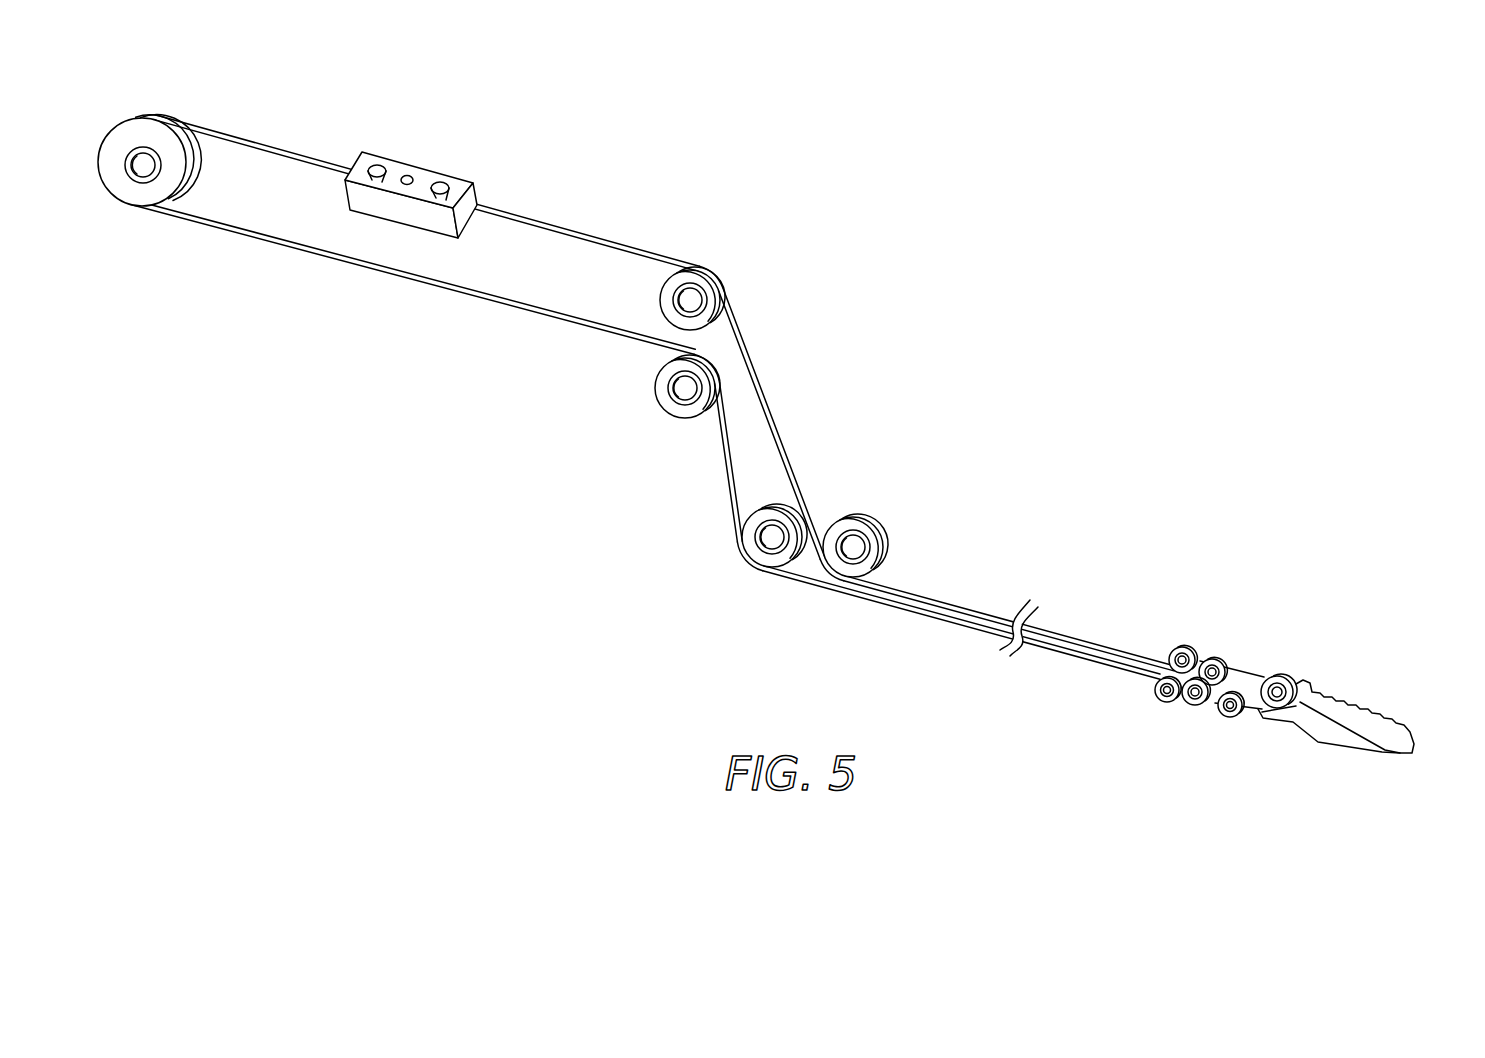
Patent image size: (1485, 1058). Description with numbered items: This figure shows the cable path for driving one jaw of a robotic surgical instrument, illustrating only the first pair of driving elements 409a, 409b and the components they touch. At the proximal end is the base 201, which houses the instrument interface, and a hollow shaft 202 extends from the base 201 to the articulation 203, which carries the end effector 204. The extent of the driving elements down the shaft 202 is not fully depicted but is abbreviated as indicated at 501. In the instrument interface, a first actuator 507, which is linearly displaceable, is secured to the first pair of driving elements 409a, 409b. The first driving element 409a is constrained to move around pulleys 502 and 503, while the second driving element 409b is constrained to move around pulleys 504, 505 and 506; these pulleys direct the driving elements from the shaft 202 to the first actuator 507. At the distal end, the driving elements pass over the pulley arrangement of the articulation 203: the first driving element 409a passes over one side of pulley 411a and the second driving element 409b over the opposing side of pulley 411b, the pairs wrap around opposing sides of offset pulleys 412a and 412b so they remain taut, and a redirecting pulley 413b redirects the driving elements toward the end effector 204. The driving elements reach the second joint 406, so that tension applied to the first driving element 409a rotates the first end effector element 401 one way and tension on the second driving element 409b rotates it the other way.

The base 201 is at (563, 128).
The shaft 202 is at (1097, 545).
The articulation 203 is at (1307, 618).
The end effector 204 is at (1407, 693).
The first end effector element 401 is at (1356, 748).
The second joint 406 is at (1292, 684).
The first driving element 409a is at (575, 232).
The second driving element 409b is at (455, 300).
The pulley 411a is at (1210, 660).
The pulley 411b is at (1190, 706).
The first pulley 412a is at (1176, 650).
The second pulley 412b is at (1158, 694).
The redirecting pulley 413b is at (1228, 718).
The abbreviation of shaft 501 is at (1035, 612).
The pulley 502 is at (847, 522).
The pulley 503 is at (702, 280).
The pulley 504 is at (752, 556).
The pulley 505 is at (665, 398).
The pulley 506 is at (138, 205).
The first actuator 507 is at (430, 172).